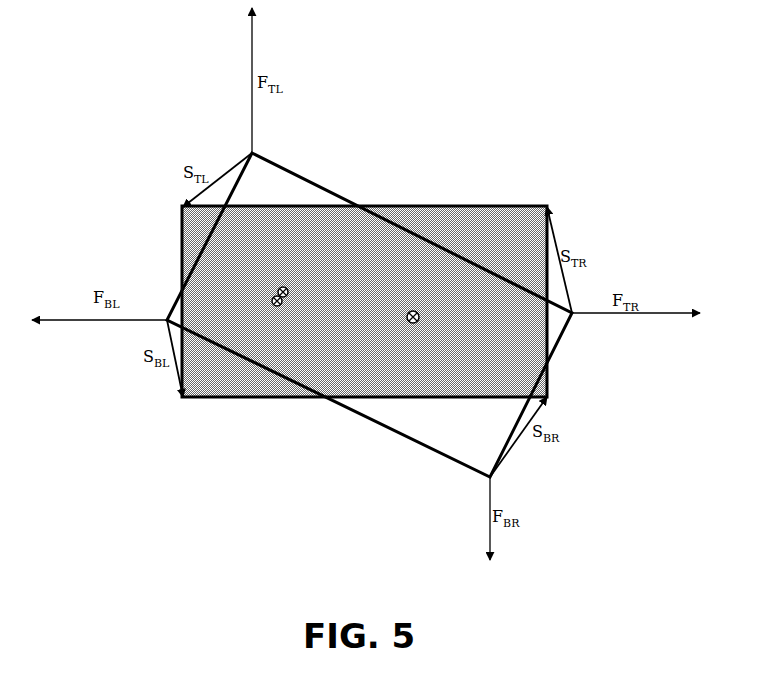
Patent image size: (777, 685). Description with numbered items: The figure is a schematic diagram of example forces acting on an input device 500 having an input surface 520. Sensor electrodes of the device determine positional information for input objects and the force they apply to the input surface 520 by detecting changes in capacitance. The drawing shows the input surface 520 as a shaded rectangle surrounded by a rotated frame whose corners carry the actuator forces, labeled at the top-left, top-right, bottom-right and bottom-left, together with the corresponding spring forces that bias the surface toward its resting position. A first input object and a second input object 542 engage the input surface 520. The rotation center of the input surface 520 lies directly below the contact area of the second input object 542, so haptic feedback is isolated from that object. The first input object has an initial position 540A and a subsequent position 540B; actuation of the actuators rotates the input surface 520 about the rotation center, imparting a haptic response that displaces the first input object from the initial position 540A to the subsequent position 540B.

The input device 500 is at (476, 70).
The input surface 520 is at (458, 207).
The initial position of first input object 540A is at (272, 300).
The subsequent position of first input object 540B is at (279, 289).
The second input object 542 is at (412, 311).